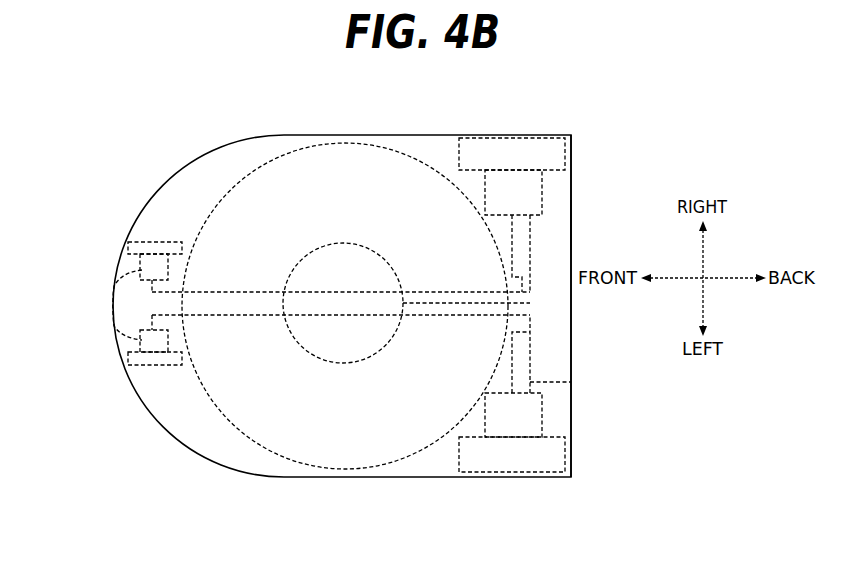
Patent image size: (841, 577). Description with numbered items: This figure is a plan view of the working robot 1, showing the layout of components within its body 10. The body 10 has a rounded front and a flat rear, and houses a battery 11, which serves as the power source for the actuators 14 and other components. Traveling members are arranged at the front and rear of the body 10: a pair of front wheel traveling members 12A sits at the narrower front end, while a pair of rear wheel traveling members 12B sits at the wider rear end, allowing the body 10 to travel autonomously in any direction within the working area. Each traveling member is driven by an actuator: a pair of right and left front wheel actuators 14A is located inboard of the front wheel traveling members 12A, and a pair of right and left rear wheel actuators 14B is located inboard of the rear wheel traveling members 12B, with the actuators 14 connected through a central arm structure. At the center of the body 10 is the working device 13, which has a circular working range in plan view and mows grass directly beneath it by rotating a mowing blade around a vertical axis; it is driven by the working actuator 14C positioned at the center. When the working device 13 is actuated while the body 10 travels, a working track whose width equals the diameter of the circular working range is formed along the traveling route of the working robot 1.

The working robot 1 is at (568, 108).
The body 10 is at (447, 134).
The battery 11 is at (532, 229).
The front wheel traveling members 12A is at (148, 242).
The rear wheel traveling members 12B is at (506, 136).
The working device 13 is at (262, 165).
The actuators 14 is at (341, 303).
The front wheel actuators 14A is at (114, 332).
The rear wheel actuators 14B is at (545, 174).
The working actuator 14C is at (333, 365).